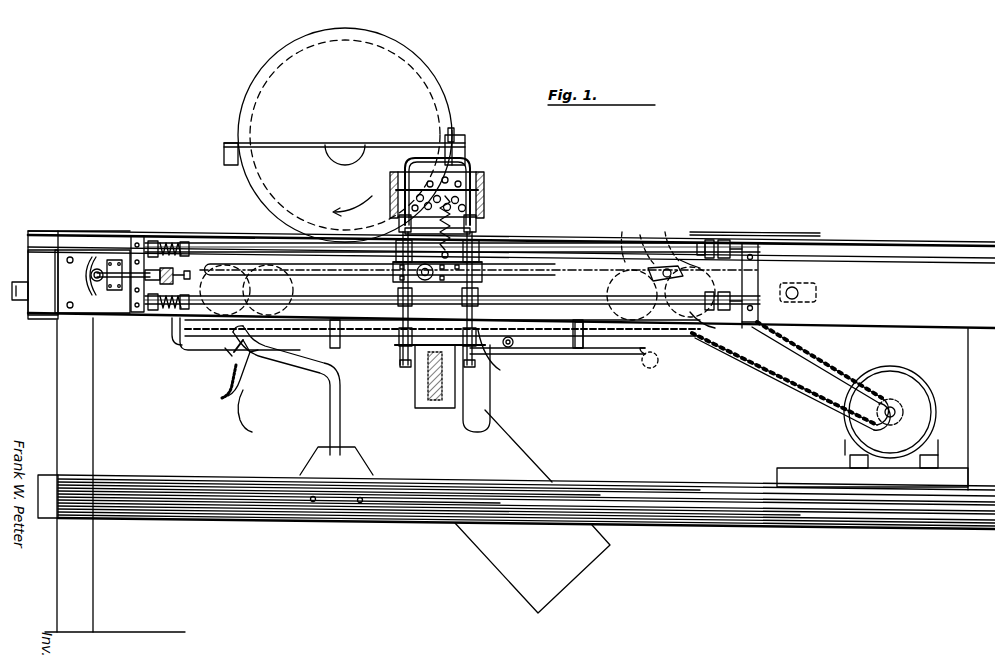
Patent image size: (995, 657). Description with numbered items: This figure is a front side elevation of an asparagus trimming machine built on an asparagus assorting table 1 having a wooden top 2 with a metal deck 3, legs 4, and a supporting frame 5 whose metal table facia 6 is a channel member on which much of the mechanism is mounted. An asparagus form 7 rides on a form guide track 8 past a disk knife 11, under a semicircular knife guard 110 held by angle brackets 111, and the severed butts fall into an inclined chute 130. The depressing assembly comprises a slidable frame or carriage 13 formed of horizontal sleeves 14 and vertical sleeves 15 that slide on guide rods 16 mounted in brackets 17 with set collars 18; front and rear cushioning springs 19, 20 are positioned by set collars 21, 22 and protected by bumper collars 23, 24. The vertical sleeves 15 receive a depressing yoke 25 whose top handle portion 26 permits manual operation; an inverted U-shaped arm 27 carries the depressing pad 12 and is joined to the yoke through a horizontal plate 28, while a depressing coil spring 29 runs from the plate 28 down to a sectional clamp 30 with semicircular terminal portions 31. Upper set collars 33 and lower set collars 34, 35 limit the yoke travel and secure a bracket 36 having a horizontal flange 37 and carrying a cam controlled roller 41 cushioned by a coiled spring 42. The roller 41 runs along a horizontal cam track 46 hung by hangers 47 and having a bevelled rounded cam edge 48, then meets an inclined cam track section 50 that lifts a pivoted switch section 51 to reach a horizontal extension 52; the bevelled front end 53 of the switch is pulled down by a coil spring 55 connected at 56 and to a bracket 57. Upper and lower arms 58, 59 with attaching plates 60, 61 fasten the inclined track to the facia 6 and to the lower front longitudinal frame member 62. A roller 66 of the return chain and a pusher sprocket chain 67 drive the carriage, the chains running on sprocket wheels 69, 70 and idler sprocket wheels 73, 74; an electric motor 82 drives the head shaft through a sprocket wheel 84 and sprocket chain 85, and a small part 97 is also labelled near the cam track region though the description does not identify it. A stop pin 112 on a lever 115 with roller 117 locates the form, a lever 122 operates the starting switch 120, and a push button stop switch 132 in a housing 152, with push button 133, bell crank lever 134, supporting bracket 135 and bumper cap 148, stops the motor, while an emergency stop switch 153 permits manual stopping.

The asparagus assorting table 1 is at (48, 312).
The wooden top 2 is at (917, 245).
The metal deck 3 is at (960, 244).
The legs 4 is at (95, 438).
The frame 5 is at (32, 258).
The metal table facia 6 is at (930, 318).
The asparagus form 7 is at (478, 224).
The form guide track 8 is at (775, 239).
The disk knife 11 is at (250, 168).
The depressing pad 12 is at (478, 176).
The slidable frame or carriage 13 is at (395, 290).
The horizontal sleeves 14 is at (482, 244).
The vertical sleeves 15 is at (400, 320).
The guide rods 16 is at (250, 247).
The brackets 17 is at (760, 268).
The set collars 18 is at (752, 325).
The front cushioning springs 19 is at (152, 240).
The rear cushioning springs 20 is at (714, 242).
The set collars 21 is at (165, 242).
The set collars 22 is at (745, 240).
The bumper collars 23 is at (187, 242).
The bumper collars 24 is at (700, 244).
The depressing yoke 25 is at (385, 202).
The top handle portion 26 is at (420, 158).
The inverted U-shaped arm 27 is at (455, 145).
The horizontal plate 28 is at (484, 190).
The depressing coil spring 29 is at (448, 236).
The sectional clamp 30 is at (437, 283).
The semicircular terminal portions 31 is at (484, 262).
The upper set collars 33 is at (484, 232).
The lower set collar 34 is at (398, 350).
The lower set collar 35 is at (500, 372).
The bracket 36 is at (478, 430).
The horizontal flange 37 is at (418, 346).
The cam controlled roller 41 is at (416, 385).
The coiled spring 42 is at (425, 400).
The horizontal cam track 46 is at (573, 356).
The hangers 47 is at (333, 338).
The bevelled rounded cam edge 48 is at (652, 370).
The inclined cam track section 50 is at (255, 358).
The pivoted switch section 51 is at (265, 358).
The horizontal extension 52 is at (232, 356).
The front end of the switch 53 is at (238, 355).
The coil spring 55 is at (228, 400).
The spring connection 56 is at (280, 300).
The bracket 57 is at (254, 432).
The upper arm 58 is at (180, 340).
The lower arm 59 is at (330, 420).
The attaching plate 60 is at (172, 338).
The attaching plate 61 is at (312, 458).
The lower front longitudinal frame member 62 is at (246, 515).
The roller 66 is at (570, 350).
The pusher sprocket chain 67 is at (695, 335).
The sprocket wheel 69 is at (745, 265).
The sprocket wheel 70 is at (615, 293).
The idler sprocket wheel 73 is at (268, 265).
The idler sprocket wheel 74 is at (222, 277).
The electric motor 82 is at (912, 388).
The sprocket wheel 84 is at (876, 404).
The sprocket chain 85 is at (815, 398).
The pivot 97 is at (512, 339).
The knife guard 110 is at (260, 80).
The angle brackets 111 is at (228, 145).
The stop pin 112 is at (624, 240).
The lever 115 is at (646, 274).
The roller 117 is at (668, 240).
The starting switch 120 is at (696, 260).
The lever 122 is at (652, 252).
The inclined chute 130 is at (515, 455).
The push button stop switch 132 is at (108, 285).
The push button 133 is at (14, 289).
The bell crank lever 134 is at (87, 232).
The supporting bracket 135 is at (96, 292).
The bumper cap 148 is at (188, 266).
The housing 152 is at (85, 235).
The emergency stop switch 153 is at (808, 303).